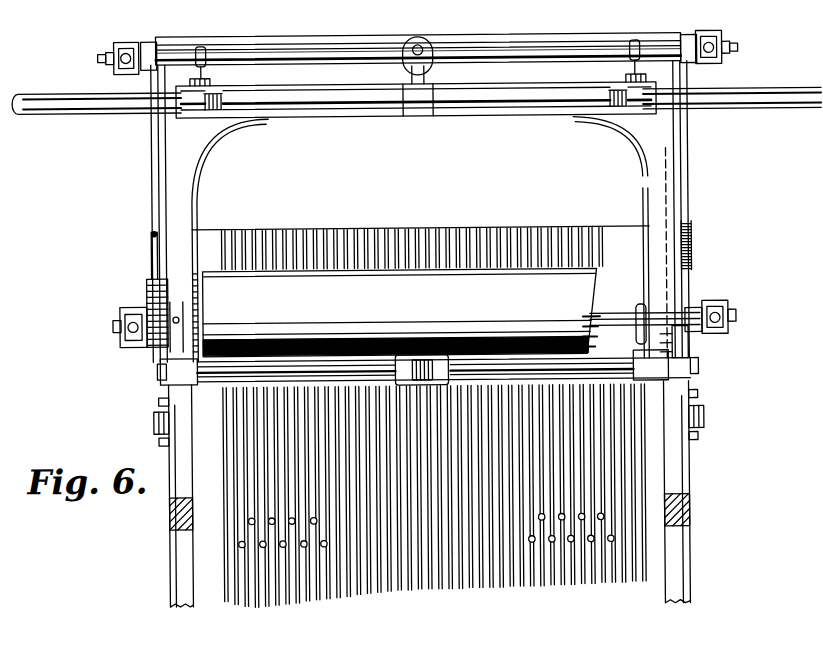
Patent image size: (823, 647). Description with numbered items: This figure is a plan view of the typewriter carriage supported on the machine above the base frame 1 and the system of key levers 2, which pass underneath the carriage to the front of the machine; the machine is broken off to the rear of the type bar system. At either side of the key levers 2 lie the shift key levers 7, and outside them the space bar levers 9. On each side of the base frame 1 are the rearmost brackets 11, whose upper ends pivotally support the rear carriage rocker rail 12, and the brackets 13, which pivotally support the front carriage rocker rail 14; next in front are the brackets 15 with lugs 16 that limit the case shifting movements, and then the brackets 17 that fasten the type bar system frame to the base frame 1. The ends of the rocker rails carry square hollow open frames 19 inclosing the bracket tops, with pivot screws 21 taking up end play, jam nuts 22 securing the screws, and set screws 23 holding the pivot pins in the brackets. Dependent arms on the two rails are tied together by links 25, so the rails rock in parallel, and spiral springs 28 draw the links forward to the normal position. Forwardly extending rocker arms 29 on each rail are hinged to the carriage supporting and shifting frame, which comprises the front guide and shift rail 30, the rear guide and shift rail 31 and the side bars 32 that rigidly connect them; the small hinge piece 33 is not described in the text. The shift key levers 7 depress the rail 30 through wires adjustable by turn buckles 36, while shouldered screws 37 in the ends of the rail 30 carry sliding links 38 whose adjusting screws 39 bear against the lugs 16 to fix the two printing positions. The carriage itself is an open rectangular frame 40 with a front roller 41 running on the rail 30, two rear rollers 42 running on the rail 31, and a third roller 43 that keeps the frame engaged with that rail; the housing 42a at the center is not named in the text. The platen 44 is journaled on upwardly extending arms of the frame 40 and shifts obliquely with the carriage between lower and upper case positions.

The base frame 1 is at (510, 36).
The key levers 2 is at (312, 597).
The shift key levers 7 is at (229, 600).
The space bar levers 9 is at (222, 551).
The rearmost brackets 11 is at (148, 40).
The rear carriage rocker rail 12 is at (342, 47).
The brackets 13 is at (690, 338).
The front carriage rocker rail 14 is at (690, 312).
The brackets 15 is at (175, 447).
The lugs 16 is at (153, 420).
The brackets 17 is at (168, 516).
The square hollow open frames 19 is at (116, 42).
The pivot screws 21 is at (108, 62).
The jam nuts 22 is at (108, 56).
The set screws 23 is at (128, 52).
The links 25 is at (153, 174).
The spiral spring 28 is at (152, 254).
The forwardly extending rocker arm 29 is at (208, 66).
The front guide and shift rail 30 is at (606, 378).
The rear guide and shift rail 31 is at (92, 112).
The side bars 32 is at (196, 220).
The clip 33 is at (194, 79).
The turn buckles 36 is at (247, 519).
The shouldered screw 37 is at (157, 370).
The sliding links 38 is at (158, 392).
The adjusting screws 39 is at (158, 440).
The open rectangular frame 40 is at (360, 116).
The roller 41 is at (424, 335).
The rollers 42 is at (214, 110).
The spring housing 42a is at (420, 42).
The third roller 43 is at (420, 116).
The platen 44 is at (385, 312).